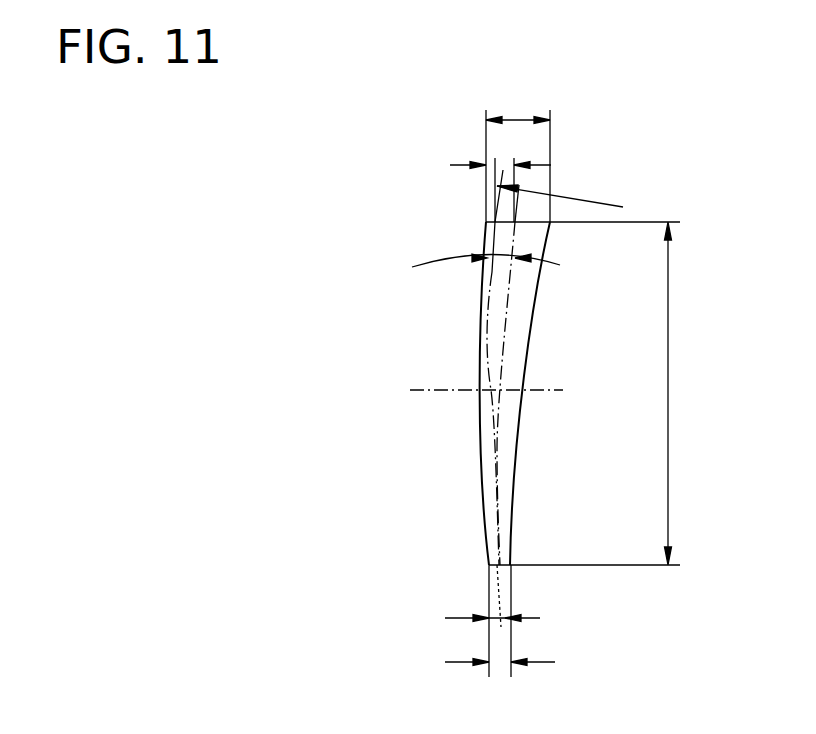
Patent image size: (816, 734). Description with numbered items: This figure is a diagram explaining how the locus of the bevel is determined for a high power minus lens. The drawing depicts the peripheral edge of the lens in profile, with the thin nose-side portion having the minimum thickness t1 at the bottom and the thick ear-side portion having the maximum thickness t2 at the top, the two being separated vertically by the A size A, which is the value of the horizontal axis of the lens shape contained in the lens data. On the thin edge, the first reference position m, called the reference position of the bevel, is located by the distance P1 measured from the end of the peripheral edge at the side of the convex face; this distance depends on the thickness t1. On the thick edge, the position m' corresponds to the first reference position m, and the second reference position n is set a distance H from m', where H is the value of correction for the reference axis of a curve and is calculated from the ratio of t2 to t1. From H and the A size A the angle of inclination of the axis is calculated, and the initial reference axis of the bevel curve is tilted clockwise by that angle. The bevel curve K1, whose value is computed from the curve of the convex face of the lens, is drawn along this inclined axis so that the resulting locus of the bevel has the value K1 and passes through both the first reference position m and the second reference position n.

The position corresponding to the first reference position m' is at (446, 367).
The second reference position n is at (516, 223).
The first reference position m is at (538, 398).
The A size A is at (589, 393).
The thickness of the portion having the maximum thickness t2 is at (518, 152).
The thickness of the portion having the minimum thickness t1 is at (506, 648).
The value of correction for the reference axis of a curve H is at (500, 179).
The bevel curve K1 is at (564, 186).
The distance from the end of the peripheral edge to the first reference position P1 is at (491, 621).